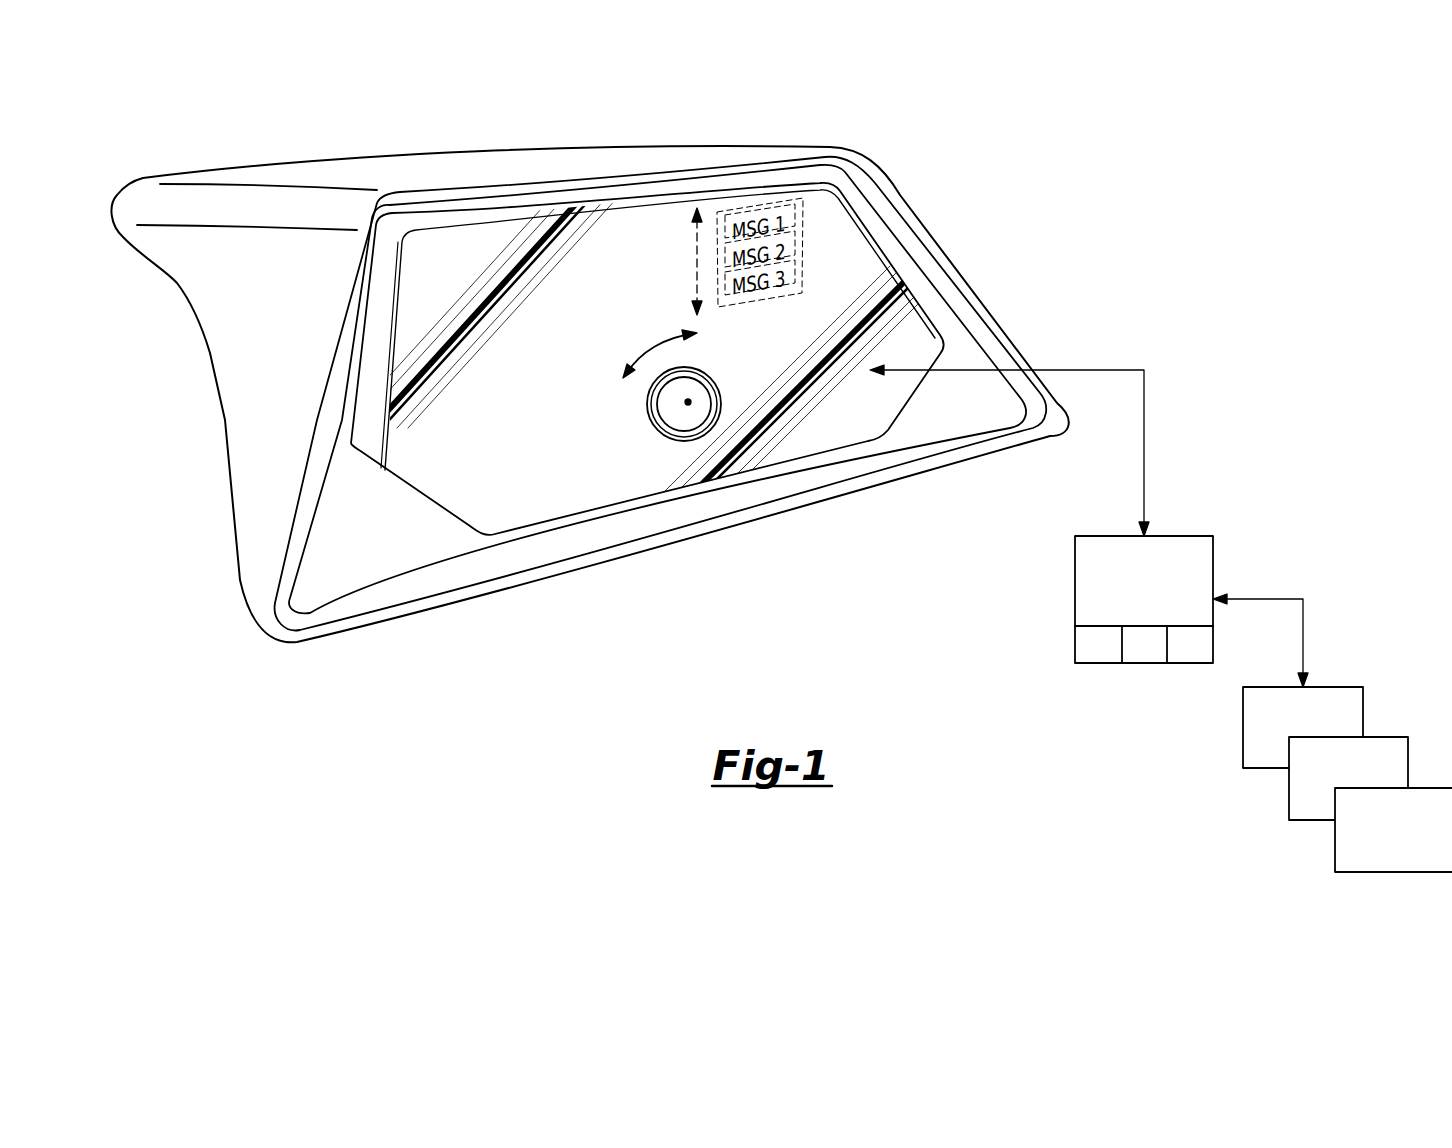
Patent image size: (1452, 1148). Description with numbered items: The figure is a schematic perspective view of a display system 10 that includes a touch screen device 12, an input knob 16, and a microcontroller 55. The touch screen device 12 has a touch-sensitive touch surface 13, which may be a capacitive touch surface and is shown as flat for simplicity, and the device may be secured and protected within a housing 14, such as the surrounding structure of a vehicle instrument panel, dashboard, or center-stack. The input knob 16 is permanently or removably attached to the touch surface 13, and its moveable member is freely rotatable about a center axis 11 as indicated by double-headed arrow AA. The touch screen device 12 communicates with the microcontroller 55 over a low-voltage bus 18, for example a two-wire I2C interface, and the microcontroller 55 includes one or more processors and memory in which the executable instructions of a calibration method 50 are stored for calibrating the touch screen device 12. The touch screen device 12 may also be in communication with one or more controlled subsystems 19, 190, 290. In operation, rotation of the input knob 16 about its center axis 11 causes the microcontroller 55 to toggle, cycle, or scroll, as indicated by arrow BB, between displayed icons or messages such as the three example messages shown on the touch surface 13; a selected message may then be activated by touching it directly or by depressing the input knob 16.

The display system 10 is at (1133, 161).
The center axis 11 is at (688, 402).
The touch screen device 12 is at (948, 202).
The touch surface 13 is at (533, 482).
The housing 14 is at (185, 202).
The input knob 16 is at (703, 372).
The low-voltage bus 18 is at (1095, 368).
The controlled subsystem 19 is at (1303, 727).
The calibration method 50 is at (1185, 644).
The microcontroller 55 is at (1144, 599).
The controlled subsystem 190 is at (1348, 778).
The controlled subsystem 290 is at (1393, 830).
The double-headed arrow AA is at (653, 347).
The arrow BB is at (690, 263).